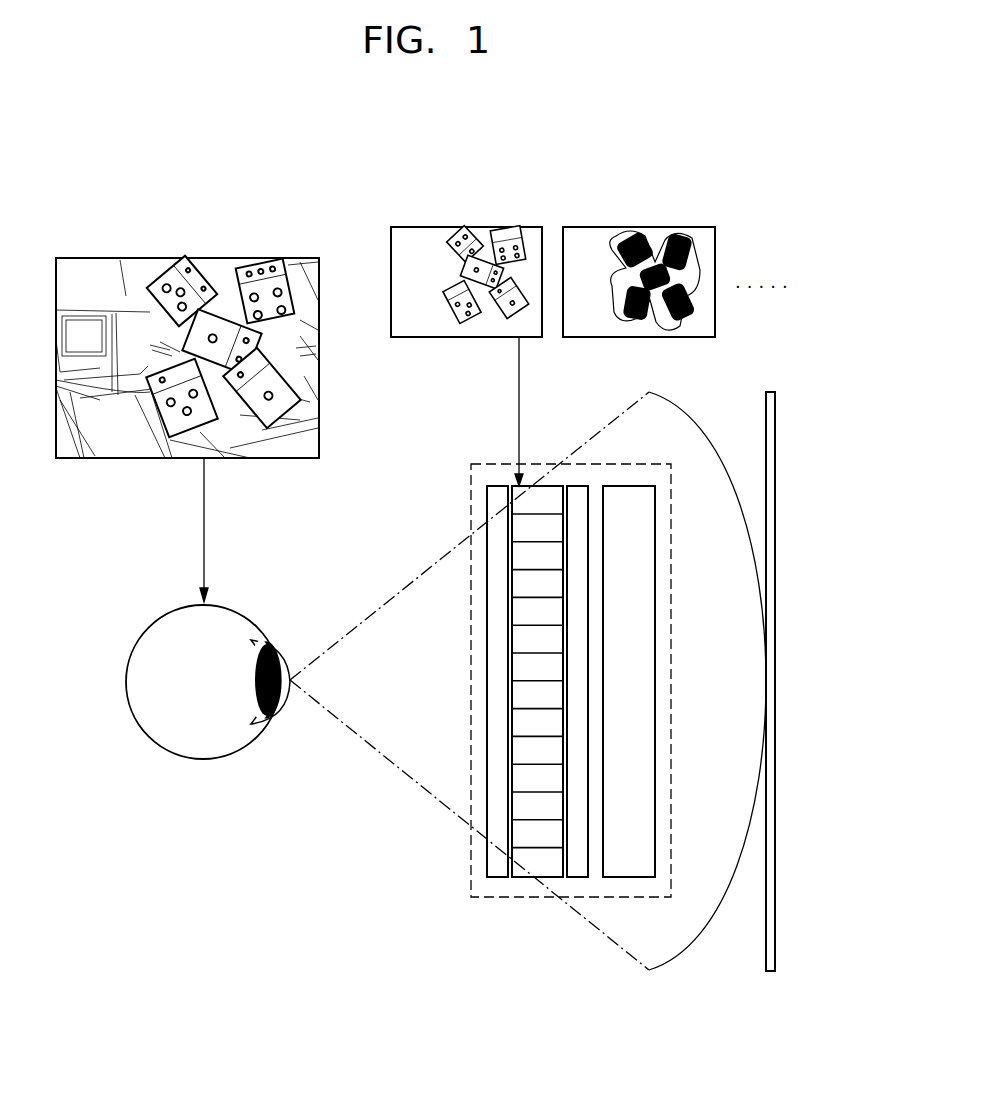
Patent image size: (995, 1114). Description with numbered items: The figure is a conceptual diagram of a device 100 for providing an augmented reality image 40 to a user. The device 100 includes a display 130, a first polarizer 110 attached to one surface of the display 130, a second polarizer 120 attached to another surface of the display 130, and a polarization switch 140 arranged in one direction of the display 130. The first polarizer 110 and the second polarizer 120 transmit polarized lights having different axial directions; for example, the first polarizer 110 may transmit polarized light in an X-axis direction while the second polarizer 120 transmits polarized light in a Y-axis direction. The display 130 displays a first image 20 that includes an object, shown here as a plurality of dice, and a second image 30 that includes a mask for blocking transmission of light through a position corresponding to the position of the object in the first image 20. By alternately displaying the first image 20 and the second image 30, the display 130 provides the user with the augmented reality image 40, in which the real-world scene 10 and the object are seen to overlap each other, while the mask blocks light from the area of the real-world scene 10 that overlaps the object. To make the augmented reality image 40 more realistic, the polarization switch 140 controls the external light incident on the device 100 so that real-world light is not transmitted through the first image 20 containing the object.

The real-world scene 10 is at (775, 412).
The first image 20 is at (425, 227).
The second image 30 is at (595, 227).
The augmented reality image 40 is at (188, 258).
The device 100 is at (490, 464).
The first polarizer 110 is at (487, 500).
The second polarizer 120 is at (582, 486).
The display 130 is at (548, 486).
The polarization switch 140 is at (635, 486).